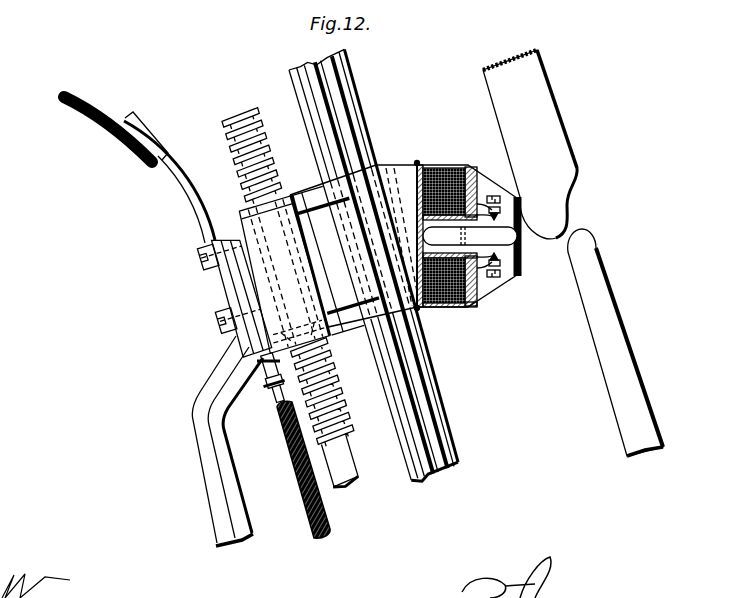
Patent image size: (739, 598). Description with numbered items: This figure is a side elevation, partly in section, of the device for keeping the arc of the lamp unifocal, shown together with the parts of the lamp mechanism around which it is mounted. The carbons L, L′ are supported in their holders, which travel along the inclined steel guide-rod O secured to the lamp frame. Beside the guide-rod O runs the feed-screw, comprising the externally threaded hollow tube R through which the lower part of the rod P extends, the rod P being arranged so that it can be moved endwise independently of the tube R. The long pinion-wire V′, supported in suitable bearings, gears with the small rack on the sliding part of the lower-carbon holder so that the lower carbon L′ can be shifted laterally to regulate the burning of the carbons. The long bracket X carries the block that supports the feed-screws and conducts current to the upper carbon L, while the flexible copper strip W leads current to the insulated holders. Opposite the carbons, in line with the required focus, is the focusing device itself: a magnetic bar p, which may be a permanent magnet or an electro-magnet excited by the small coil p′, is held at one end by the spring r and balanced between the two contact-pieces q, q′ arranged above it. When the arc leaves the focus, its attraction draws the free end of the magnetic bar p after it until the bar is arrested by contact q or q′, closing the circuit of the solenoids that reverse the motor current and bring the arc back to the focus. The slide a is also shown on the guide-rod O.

The guide-rod O is at (378, 266).
The slide on column a is at (353, 250).
The hollow rod or tube R is at (338, 386).
The rod P is at (340, 462).
The pinion-wire V′ is at (302, 469).
The bracket X is at (236, 441).
The flexible copper strip W is at (139, 170).
The magnetic bar p is at (465, 236).
The coil p′ is at (425, 199).
The spring r is at (461, 232).
The contact-piece q is at (478, 227).
The contact-piece q′ is at (480, 250).
The carbon L is at (530, 144).
The carbon L′ is at (615, 342).